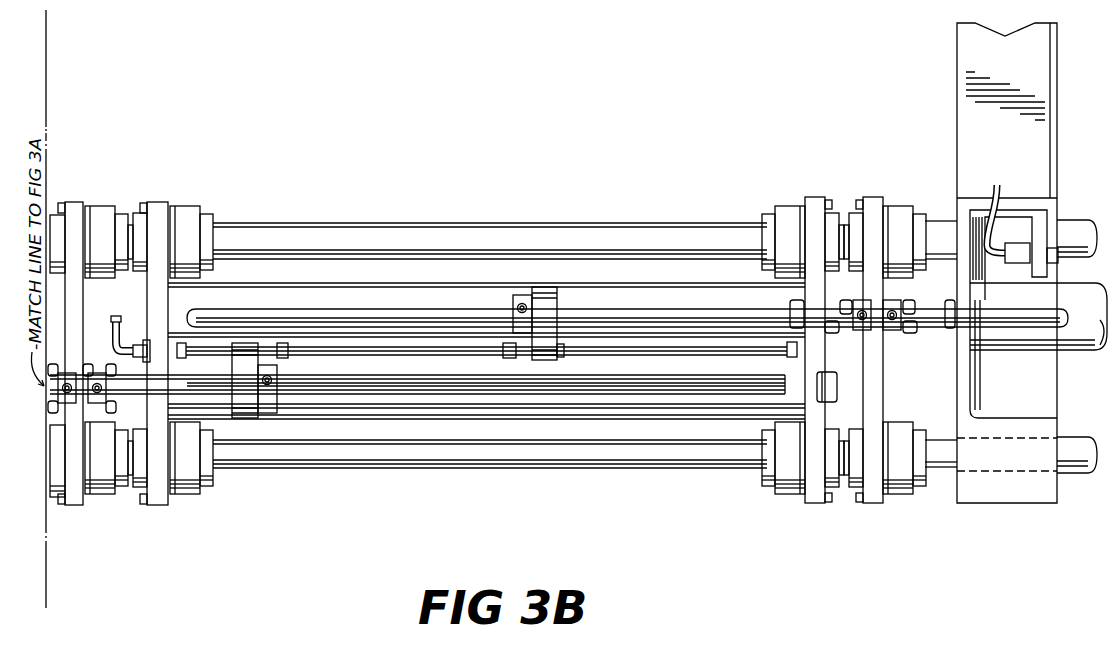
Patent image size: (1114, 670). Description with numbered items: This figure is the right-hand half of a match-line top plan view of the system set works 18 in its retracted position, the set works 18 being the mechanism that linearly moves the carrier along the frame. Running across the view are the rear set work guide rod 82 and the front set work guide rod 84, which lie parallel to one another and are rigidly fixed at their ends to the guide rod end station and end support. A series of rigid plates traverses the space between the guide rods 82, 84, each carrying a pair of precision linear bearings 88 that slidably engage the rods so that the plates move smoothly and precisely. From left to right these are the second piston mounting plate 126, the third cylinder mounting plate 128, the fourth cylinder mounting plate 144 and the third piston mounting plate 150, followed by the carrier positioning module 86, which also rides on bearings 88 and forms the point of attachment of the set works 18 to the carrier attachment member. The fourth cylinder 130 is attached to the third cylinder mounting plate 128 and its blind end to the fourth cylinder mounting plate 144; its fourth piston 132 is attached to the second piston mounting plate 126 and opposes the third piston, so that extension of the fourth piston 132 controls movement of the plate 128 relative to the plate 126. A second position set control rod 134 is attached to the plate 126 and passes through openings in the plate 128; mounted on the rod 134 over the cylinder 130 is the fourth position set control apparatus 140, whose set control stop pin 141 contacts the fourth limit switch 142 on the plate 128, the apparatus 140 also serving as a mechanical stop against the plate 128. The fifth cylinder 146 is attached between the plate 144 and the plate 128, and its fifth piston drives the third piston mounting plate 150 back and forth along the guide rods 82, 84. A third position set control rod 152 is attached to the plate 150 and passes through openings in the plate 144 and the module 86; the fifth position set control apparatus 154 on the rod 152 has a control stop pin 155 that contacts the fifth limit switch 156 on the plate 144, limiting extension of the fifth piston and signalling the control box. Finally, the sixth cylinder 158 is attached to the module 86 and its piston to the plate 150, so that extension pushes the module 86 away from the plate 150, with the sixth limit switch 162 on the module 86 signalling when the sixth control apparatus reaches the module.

The system set works 18 is at (272, 106).
The rear set work guide rod 82 is at (450, 235).
The front set work guide rod 84 is at (418, 469).
The carrier positioning module 86 is at (1003, 498).
The bearings 88 is at (100, 215).
The second piston mounting plate 126 is at (83, 500).
The third cylinder mounting plate 128 is at (167, 502).
The fourth cylinder 130 is at (652, 373).
The fourth piston 132 is at (115, 336).
The second position set control rod 134 is at (672, 386).
The fourth position set control apparatus 140 is at (250, 418).
The set control stop pin 141 is at (289, 357).
The fourth limit switch 142 is at (150, 348).
The fourth cylinder mounting plate 144 is at (812, 503).
The fifth cylinder 146 is at (395, 305).
The third piston mounting plate 150 is at (880, 500).
The third position set control rod 152 is at (690, 313).
The fifth position set control apparatus 154 is at (555, 303).
The control stop pin 155 is at (505, 352).
The fifth limit switch 156 is at (787, 351).
The sixth cylinder 158 is at (1060, 303).
The sixth limit switch 162 is at (1017, 245).